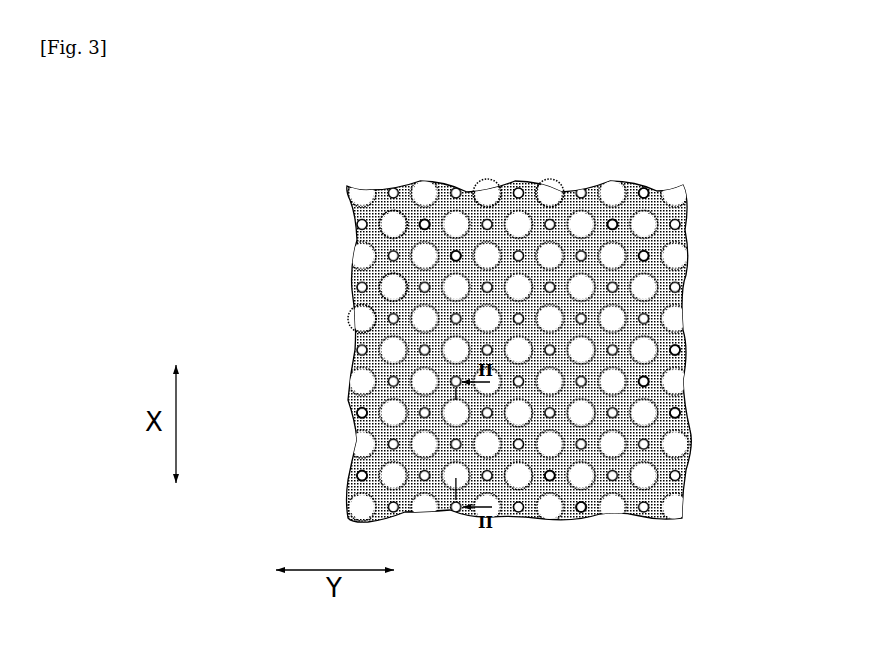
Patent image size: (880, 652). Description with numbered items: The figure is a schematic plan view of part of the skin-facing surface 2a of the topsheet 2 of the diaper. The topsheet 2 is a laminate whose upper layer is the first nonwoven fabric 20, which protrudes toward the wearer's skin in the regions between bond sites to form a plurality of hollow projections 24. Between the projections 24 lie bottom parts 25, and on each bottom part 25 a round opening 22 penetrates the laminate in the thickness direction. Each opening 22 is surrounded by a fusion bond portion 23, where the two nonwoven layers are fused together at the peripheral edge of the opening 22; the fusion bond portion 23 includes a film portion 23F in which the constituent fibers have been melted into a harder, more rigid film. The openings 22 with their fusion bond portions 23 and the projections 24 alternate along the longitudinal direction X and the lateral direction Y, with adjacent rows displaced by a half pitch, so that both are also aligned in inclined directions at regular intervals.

The topsheet 2 is at (528, 310).
The first nonwoven fabric 20 is at (672, 190).
The skin-facing surface 2a is at (391, 224).
The opening 22 is at (456, 250).
The fusion bond portion 23 is at (514, 366).
The film portion 23F is at (365, 440).
The projection 24 is at (550, 190).
The bottom part 25 is at (612, 218).